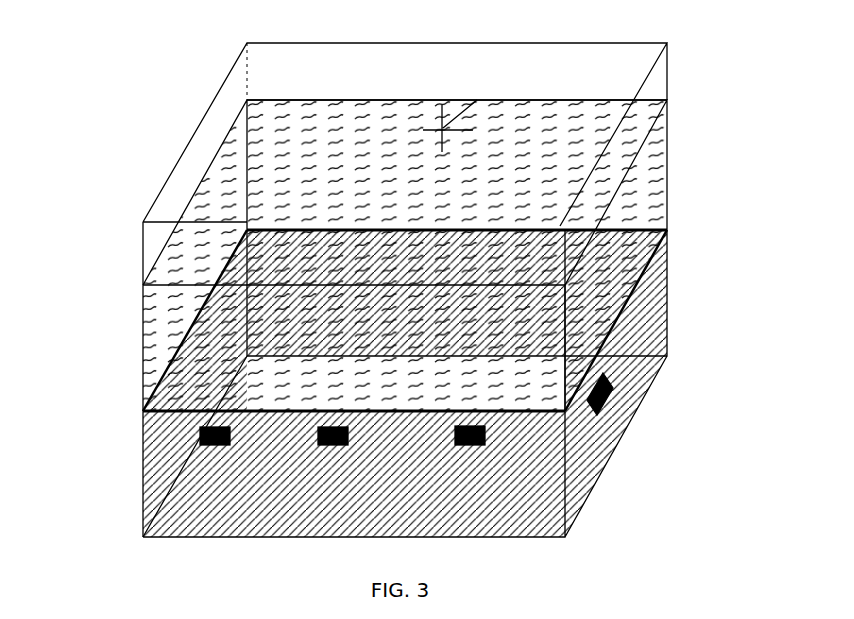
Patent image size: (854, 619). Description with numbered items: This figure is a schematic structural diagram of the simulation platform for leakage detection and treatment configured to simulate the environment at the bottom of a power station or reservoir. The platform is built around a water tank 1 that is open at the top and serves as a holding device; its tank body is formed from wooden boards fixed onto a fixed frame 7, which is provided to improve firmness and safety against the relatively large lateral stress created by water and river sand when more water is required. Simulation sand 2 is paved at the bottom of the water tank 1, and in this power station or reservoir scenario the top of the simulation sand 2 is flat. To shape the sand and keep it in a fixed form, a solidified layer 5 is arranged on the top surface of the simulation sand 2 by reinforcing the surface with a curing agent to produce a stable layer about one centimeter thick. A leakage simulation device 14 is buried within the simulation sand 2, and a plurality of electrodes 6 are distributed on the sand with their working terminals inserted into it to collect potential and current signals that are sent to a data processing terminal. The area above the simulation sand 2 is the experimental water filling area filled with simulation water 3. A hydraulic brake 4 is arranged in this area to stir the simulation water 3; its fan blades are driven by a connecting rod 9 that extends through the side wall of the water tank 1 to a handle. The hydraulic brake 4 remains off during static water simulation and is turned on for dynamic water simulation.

The water tank 1 is at (143, 247).
The simulation sand 2 is at (650, 374).
The simulation water 3 is at (668, 177).
The hydraulic brake 4 is at (477, 100).
The solidified layer 5 is at (163, 413).
The electrodes 6 is at (525, 417).
The fixed frame 7 is at (150, 220).
The connecting rod 9 is at (477, 100).
The leakage simulation device 14 is at (485, 447).